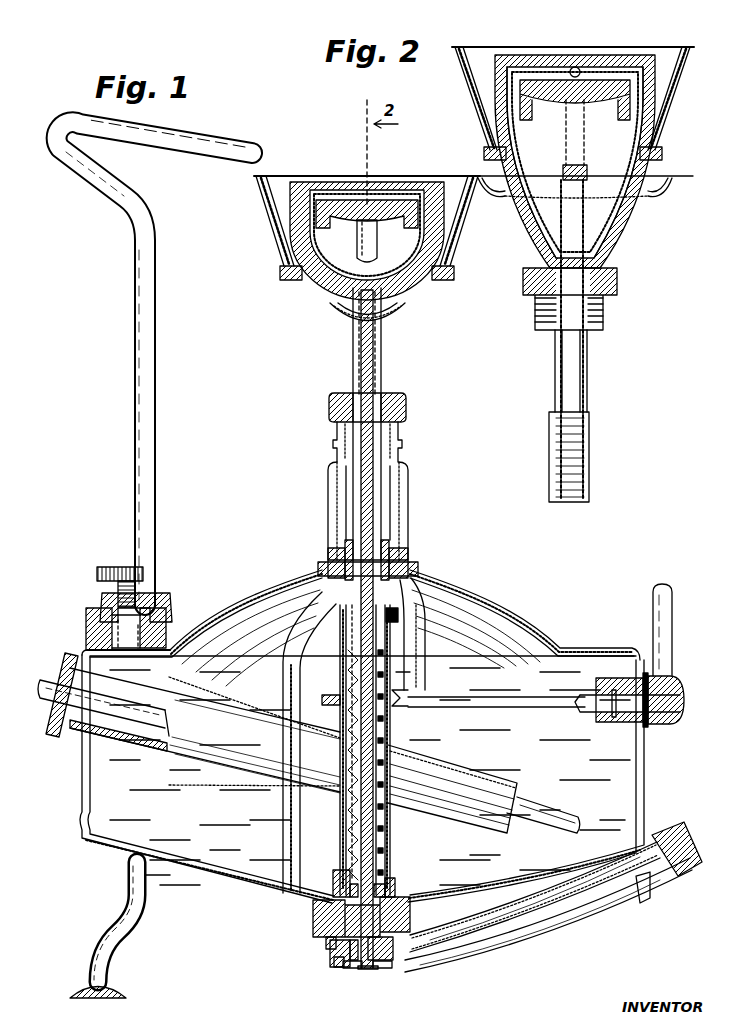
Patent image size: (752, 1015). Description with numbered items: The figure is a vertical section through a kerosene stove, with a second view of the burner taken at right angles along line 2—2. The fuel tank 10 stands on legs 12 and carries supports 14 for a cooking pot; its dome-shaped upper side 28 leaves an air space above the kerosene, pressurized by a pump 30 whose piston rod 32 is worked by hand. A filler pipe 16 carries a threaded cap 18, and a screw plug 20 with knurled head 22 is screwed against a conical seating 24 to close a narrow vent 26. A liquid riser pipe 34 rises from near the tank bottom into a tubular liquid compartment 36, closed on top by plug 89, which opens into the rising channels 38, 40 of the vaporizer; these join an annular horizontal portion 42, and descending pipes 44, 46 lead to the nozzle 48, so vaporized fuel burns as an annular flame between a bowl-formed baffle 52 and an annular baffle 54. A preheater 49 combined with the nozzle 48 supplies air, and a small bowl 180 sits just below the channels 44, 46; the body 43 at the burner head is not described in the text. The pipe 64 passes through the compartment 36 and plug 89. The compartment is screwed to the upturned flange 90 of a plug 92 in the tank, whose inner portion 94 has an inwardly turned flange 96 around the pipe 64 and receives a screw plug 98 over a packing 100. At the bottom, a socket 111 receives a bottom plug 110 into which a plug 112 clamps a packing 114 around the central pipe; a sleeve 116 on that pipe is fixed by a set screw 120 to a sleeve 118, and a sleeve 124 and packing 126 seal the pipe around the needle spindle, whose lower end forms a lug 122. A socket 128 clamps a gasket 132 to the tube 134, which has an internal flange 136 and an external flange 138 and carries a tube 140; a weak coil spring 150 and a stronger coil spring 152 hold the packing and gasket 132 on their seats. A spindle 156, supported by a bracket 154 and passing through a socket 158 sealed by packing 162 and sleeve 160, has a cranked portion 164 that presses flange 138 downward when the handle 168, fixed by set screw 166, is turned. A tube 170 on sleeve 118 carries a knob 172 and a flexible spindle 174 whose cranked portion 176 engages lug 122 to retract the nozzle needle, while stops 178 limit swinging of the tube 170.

In FIG. 1, the section line 2 is at (380, 375).
In FIG. 1, the fuel tank 10 is at (216, 893).
In FIG. 1, the legs 12 is at (124, 940).
In FIG. 1, the supports 14 is at (148, 275).
In FIG. 1, the filler pipe 16 is at (102, 643).
In FIG. 1, the cap 18 is at (176, 613).
In FIG. 1, the screw plug 20 is at (140, 592).
In FIG. 1, the knurled head 22 is at (120, 566).
In FIG. 1, the conical seating 24 is at (129, 659).
In FIG. 1, the vent 26 is at (145, 630).
In FIG. 1, the dome-shaped upper side 28 is at (245, 600).
In FIG. 1, the pump 30 is at (228, 757).
In FIG. 1, the piston rod 32 is at (120, 727).
In FIG. 1, the liquid riser pipe 34 is at (284, 806).
In FIG. 1, the tubular liquid compartment 36 is at (332, 494).
In FIG. 2, the rising channel 38 is at (492, 125).
In FIG. 2, the rising channel 40 is at (632, 160).
In FIG. 2, the annular horizontal portion 42 is at (540, 70).
In FIG. 1, the cup body 43 is at (338, 186).
In FIG. 1, the descending vaporizer pipe 44 is at (292, 245).
In FIG. 1, the descending vaporizer pipe 46 is at (448, 245).
In FIG. 1, the nozzle 48 is at (372, 282).
In FIG. 1, the preheater 49 is at (389, 499).
In FIG. 1, the bowl-formed baffle 52 is at (392, 206).
In FIG. 1, the annular baffle 54 is at (268, 205).
In FIG. 2, the annular baffle 54 is at (470, 92).
In FIG. 1, the pipe 64 is at (382, 362).
In FIG. 1, the plug 89 is at (407, 402).
In FIG. 1, the upturned flange 90 is at (406, 556).
In FIG. 1, the plug 92 is at (420, 598).
In FIG. 1, the upturned inner portion 94 is at (418, 565).
In FIG. 1, the inwardly turned flange 96 is at (390, 555).
In FIG. 1, the screw plug 98 is at (397, 625).
In FIG. 1, the packing 100 is at (335, 560).
In FIG. 1, the bottom plug 110 is at (399, 946).
In FIG. 1, the socket 111 is at (411, 916).
In FIG. 1, the plug 112 is at (326, 940).
In FIG. 1, the packing 114 is at (344, 898).
In FIG. 1, the sleeve 116 is at (350, 968).
In FIG. 1, the sleeve 118 is at (338, 967).
In FIG. 1, the set screw 120 is at (332, 955).
In FIG. 1, the lug 122 is at (367, 970).
In FIG. 1, the sleeve 124 is at (394, 943).
In FIG. 1, the packing 126 is at (386, 892).
In FIG. 1, the socket 128 is at (392, 880).
In FIG. 1, the gasket 132 is at (336, 880).
In FIG. 1, the tube 134 is at (400, 778).
In FIG. 1, the internal flange 136 is at (408, 762).
In FIG. 1, the external flange 138 is at (347, 700).
In FIG. 1, the tube 140 is at (392, 668).
In FIG. 1, the coil spring 150 is at (342, 660).
In FIG. 1, the coil spring 152 is at (330, 765).
In FIG. 1, the bracket 154 is at (432, 673).
In FIG. 1, the spindle 156 is at (554, 708).
In FIG. 1, the socket 158 is at (606, 680).
In FIG. 1, the screw-threaded sleeve 160 is at (634, 722).
In FIG. 1, the packing 162 is at (612, 722).
In FIG. 1, the cranked portion 164 is at (404, 700).
In FIG. 1, the set screw 166 is at (660, 724).
In FIG. 1, the operating handle 168 is at (652, 600).
In FIG. 1, the tube 170 is at (564, 908).
In FIG. 1, the rotatable knob 172 is at (680, 877).
In FIG. 1, the flexible spindle 174 is at (506, 946).
In FIG. 1, the cranked portion 176 is at (378, 968).
In FIG. 1, the stops 178 is at (640, 897).
In FIG. 1, the small bowl 180 is at (340, 318).
In FIG. 2, the small bowl 180 is at (656, 188).